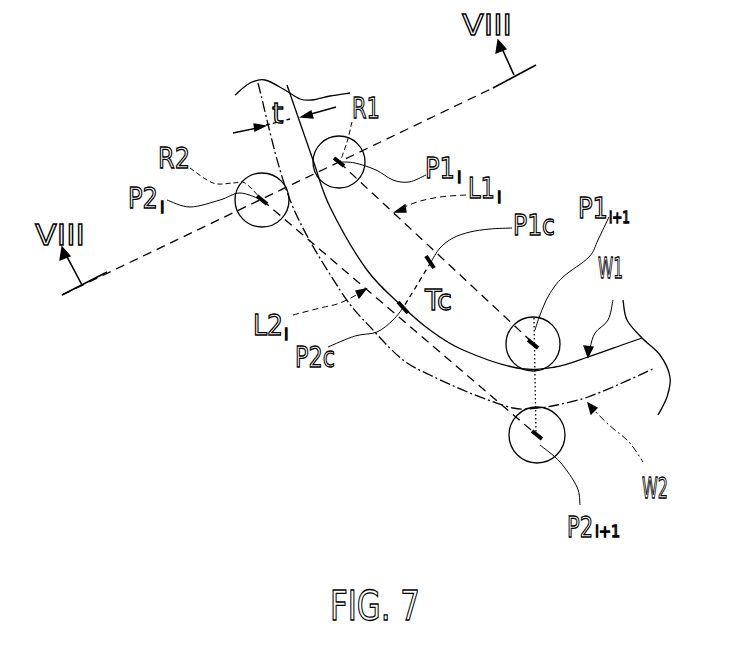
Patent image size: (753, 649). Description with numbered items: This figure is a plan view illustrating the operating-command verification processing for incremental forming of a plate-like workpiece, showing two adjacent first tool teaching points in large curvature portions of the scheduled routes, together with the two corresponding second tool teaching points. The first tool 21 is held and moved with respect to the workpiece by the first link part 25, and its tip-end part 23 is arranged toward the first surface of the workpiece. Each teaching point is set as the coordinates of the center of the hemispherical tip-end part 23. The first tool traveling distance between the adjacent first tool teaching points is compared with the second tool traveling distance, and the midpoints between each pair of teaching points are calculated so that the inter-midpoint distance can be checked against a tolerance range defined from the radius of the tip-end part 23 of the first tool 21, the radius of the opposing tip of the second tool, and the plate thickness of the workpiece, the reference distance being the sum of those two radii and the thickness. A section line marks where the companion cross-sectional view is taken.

The first tool 21 is at (430, 416).
The tip-end part 23 is at (362, 138).
The first link part 25 is at (260, 215).